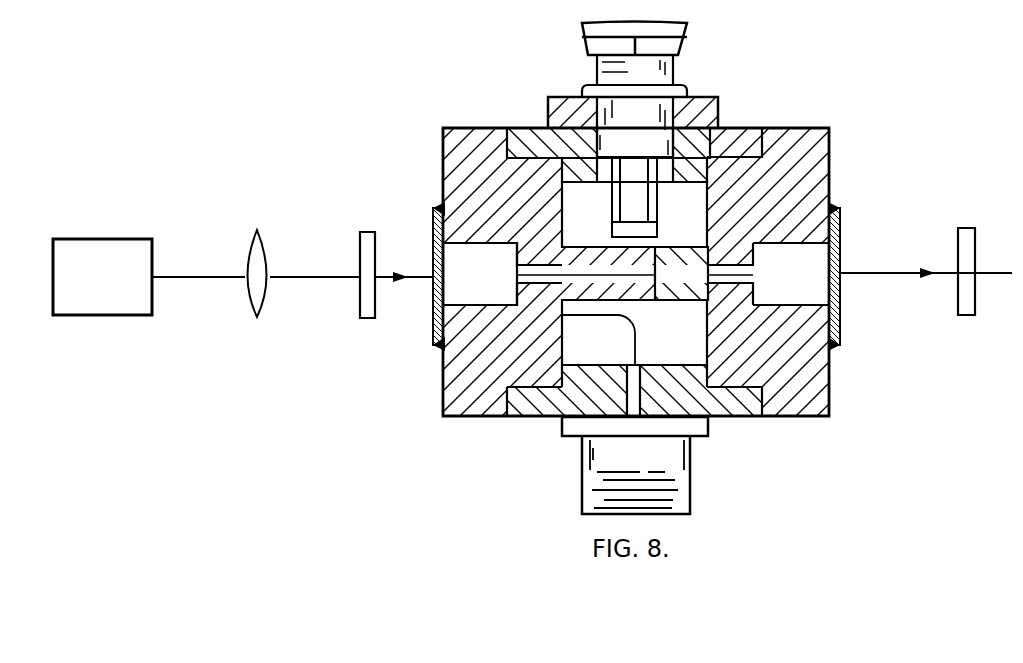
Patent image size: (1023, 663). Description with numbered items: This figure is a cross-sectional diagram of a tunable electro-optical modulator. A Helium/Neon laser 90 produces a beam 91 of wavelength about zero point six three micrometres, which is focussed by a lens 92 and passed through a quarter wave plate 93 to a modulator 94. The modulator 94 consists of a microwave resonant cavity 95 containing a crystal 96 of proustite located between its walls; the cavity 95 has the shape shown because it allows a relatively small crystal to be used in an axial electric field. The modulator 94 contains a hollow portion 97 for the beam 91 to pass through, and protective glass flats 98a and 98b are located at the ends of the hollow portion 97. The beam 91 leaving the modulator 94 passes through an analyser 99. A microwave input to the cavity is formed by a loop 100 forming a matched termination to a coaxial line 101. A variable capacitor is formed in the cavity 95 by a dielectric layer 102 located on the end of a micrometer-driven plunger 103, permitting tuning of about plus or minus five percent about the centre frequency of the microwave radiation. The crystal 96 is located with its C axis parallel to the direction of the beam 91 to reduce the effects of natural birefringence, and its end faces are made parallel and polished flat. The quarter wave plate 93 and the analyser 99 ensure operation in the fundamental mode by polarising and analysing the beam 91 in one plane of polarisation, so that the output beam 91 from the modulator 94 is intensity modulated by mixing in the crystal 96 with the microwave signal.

The Helium/Neon laser 90 is at (112, 315).
The beam 91 is at (218, 278).
The lens 92 is at (267, 288).
The quarter wave plate 93 is at (367, 318).
The modulator 94 is at (444, 369).
The microwave resonant cavity 95 is at (698, 229).
The crystal 96 is at (697, 287).
The hollow portion 97 is at (453, 292).
The protective glass flat 98a is at (432, 228).
The protective glass flat 98b is at (831, 208).
The analyser 99 is at (966, 315).
The loop 100 is at (626, 319).
The coaxial line 101 is at (720, 462).
The dielectric layer 102 is at (622, 228).
The micrometer-driven plunger 103 is at (587, 48).